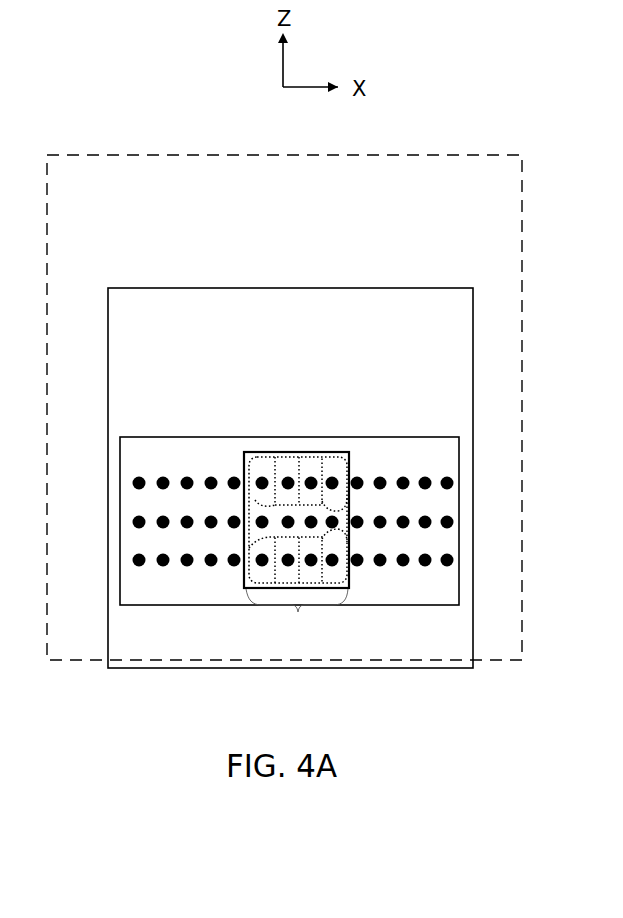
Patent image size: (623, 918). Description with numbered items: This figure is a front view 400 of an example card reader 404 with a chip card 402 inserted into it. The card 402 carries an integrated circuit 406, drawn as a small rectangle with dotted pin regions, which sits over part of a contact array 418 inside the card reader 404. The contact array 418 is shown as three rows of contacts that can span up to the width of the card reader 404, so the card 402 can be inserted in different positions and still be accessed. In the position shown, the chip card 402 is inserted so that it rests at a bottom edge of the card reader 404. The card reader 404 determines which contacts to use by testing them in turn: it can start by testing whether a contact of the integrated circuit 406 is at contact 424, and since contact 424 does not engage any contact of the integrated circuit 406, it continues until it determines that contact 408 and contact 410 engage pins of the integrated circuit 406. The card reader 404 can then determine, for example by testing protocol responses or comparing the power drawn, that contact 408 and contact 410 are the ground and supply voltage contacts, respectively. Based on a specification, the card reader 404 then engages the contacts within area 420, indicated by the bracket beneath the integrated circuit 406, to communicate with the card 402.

The front view 400 is at (323, 505).
The chip card 402 is at (522, 215).
The card reader 404 is at (473, 340).
The integrated circuit 406 is at (340, 462).
The contact 408 is at (266, 482).
The contact 410 is at (263, 560).
The contact array 418 is at (459, 458).
The area 420 is at (297, 616).
The contact 424 is at (142, 477).